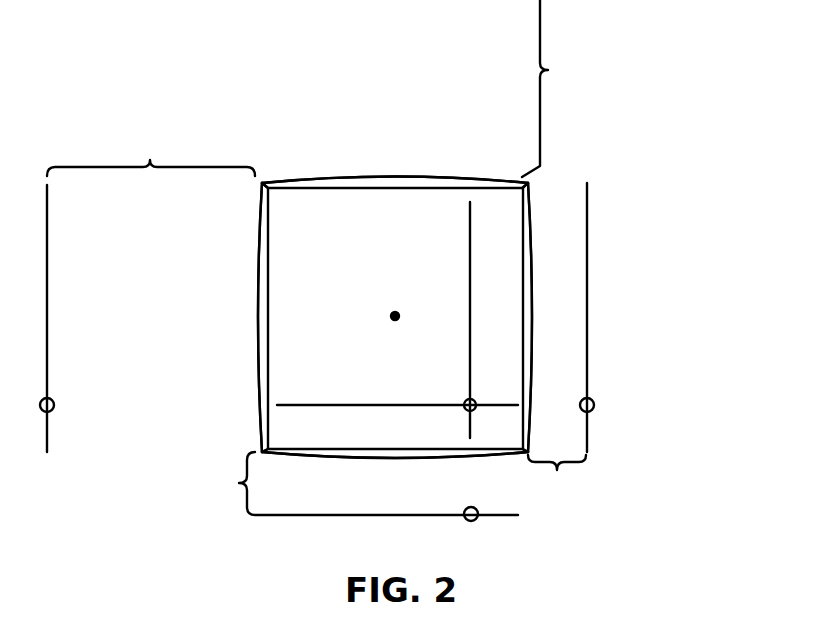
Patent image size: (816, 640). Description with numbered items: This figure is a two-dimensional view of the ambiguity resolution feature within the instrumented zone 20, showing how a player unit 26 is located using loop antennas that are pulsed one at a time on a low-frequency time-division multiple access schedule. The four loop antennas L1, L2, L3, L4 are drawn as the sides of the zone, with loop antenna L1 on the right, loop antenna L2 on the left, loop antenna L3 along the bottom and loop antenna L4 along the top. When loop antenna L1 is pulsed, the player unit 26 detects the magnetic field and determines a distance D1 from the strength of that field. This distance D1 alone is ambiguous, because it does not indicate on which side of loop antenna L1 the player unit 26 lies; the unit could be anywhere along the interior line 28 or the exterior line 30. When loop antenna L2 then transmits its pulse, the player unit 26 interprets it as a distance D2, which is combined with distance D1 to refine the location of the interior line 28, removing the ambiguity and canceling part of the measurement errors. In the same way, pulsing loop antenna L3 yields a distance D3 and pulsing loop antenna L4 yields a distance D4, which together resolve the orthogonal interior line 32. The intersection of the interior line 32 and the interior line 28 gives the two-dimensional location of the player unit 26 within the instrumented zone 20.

The instrumented zone 20 is at (588, 158).
The player unit 26 is at (466, 400).
The interior line 28 is at (468, 247).
The exterior line 30 is at (588, 240).
The interior line 32 is at (357, 403).
The distance D1 is at (557, 480).
The distance D2 is at (147, 289).
The distance D3 is at (354, 486).
The distance D4 is at (559, 88).
The loop antenna L1 is at (533, 336).
The loop antenna L2 is at (256, 338).
The loop antenna L3 is at (425, 458).
The loop antenna L4 is at (432, 177).